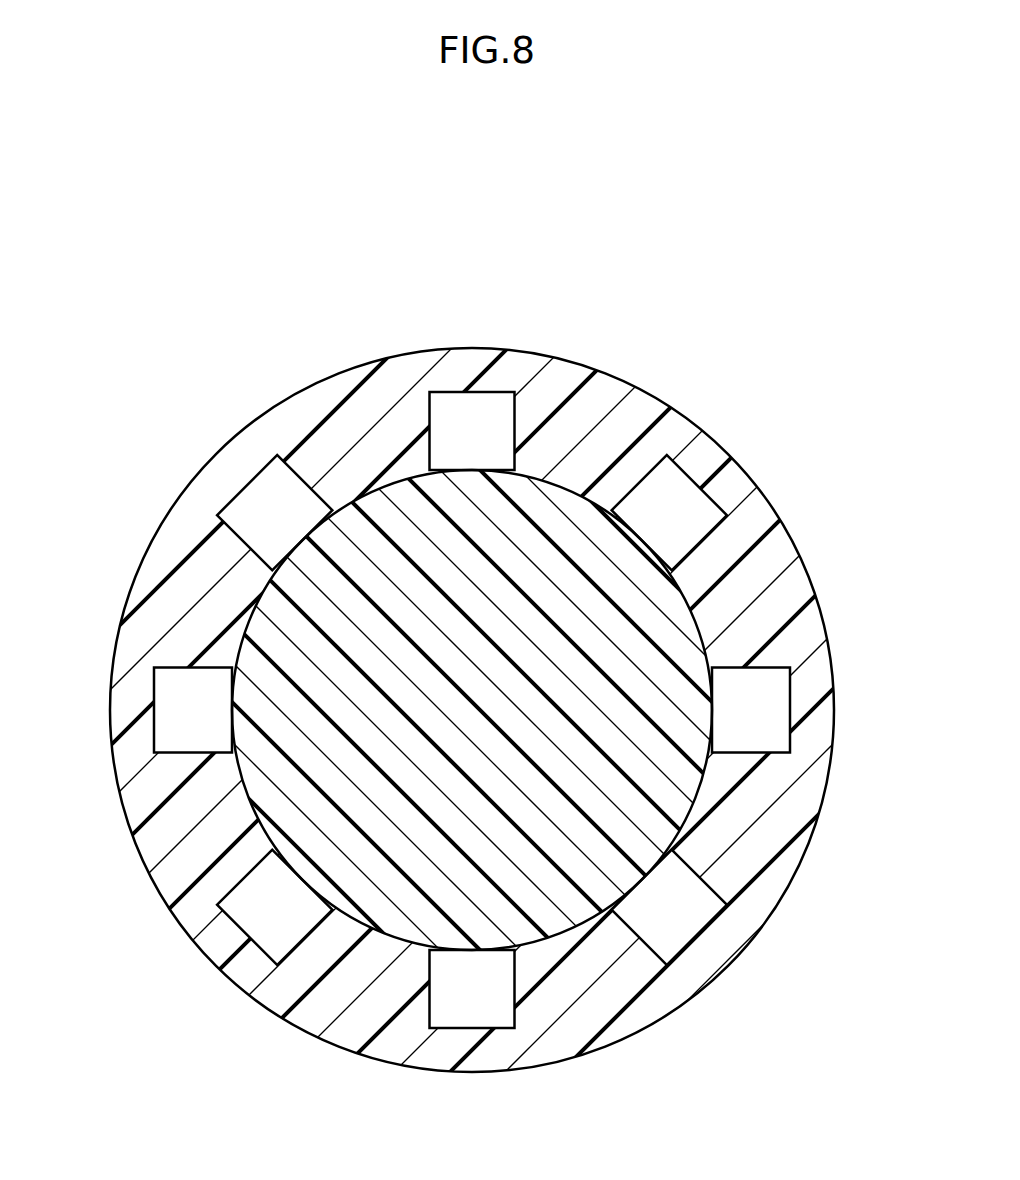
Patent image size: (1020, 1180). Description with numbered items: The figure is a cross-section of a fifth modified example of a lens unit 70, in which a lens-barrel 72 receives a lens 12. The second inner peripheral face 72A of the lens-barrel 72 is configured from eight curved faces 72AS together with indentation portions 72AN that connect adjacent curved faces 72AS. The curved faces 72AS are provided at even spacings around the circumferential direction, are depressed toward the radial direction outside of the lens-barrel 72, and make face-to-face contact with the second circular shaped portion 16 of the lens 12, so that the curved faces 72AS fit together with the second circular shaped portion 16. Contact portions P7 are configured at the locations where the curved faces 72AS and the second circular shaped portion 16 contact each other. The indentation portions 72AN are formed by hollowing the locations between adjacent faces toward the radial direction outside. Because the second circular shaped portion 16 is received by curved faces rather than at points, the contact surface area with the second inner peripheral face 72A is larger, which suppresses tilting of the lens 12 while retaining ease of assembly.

The lens unit 70 is at (510, 590).
The lens-barrel 72 is at (510, 590).
The second inner peripheral face 72A is at (510, 590).
The indentation portions 72AN is at (475, 394).
The curved faces 72AS is at (414, 482).
The contact portions P7 is at (382, 476).
The second circular shaped portion 16 is at (633, 528).
The lens 12 is at (510, 590).